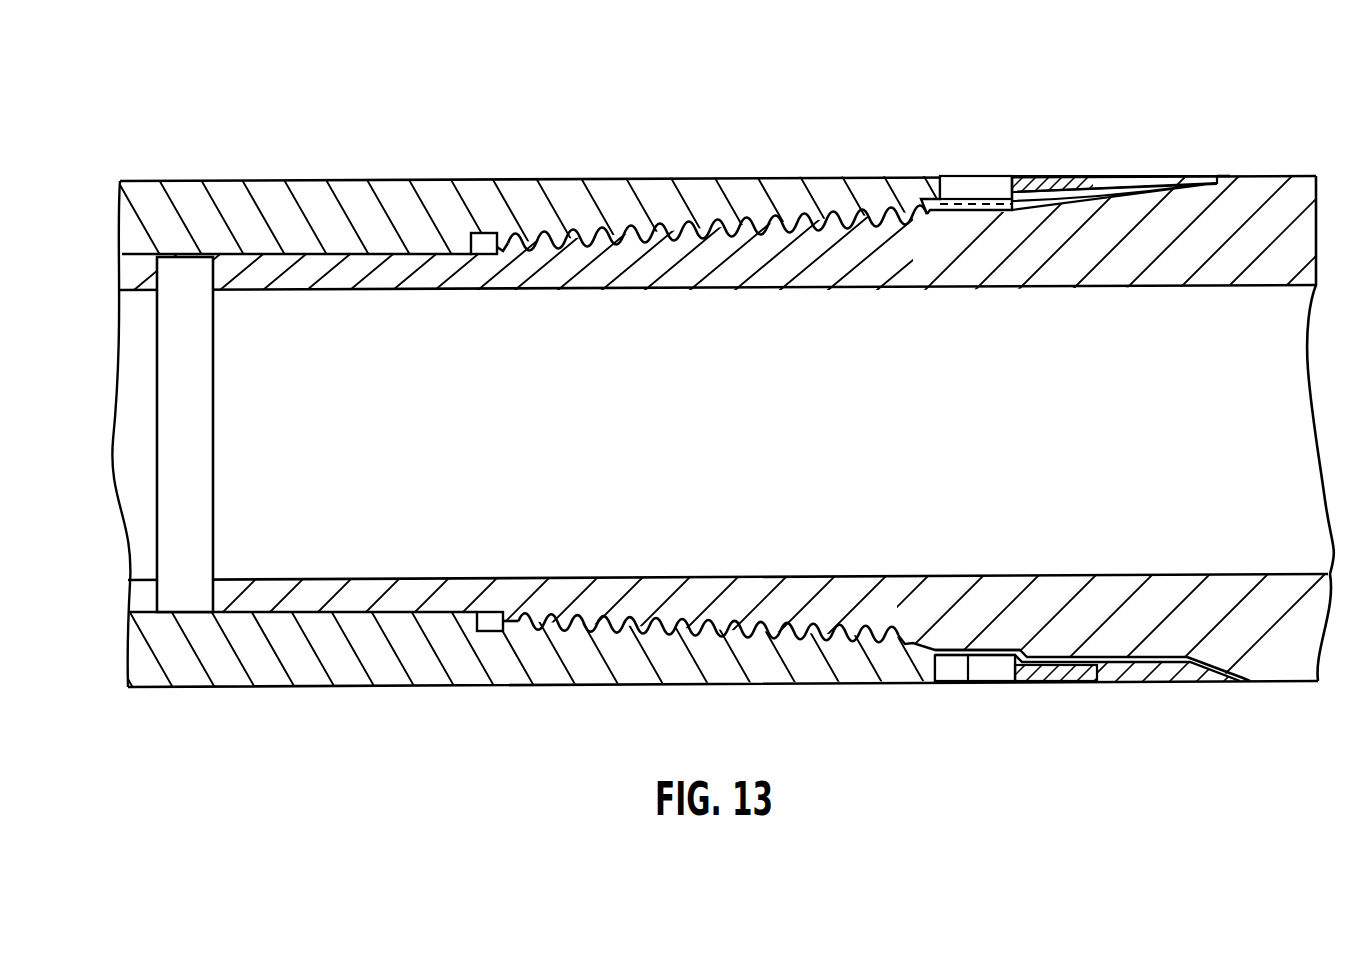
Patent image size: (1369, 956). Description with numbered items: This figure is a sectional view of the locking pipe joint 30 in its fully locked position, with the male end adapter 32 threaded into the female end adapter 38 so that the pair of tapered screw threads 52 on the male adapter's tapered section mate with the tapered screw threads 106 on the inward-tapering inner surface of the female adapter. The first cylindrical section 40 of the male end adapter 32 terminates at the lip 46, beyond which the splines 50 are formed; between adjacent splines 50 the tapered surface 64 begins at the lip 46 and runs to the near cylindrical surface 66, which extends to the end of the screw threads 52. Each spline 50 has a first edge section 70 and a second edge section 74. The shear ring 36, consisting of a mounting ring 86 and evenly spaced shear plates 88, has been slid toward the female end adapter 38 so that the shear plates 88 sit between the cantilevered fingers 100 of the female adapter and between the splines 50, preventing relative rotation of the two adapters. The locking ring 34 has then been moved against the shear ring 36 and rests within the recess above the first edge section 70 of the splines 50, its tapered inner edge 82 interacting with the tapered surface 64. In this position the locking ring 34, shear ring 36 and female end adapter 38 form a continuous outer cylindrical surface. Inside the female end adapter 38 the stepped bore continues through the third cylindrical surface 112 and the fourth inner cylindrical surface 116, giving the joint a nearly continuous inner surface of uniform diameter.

The locking pipe joint 30 is at (1190, 86).
The male end adapter 32 is at (1300, 240).
The locking ring 34 is at (1140, 177).
The shear ring 36 is at (1058, 681).
The female end adapter 38 is at (470, 187).
The first cylindrical section 40 is at (1283, 176).
The lip 46 is at (1240, 681).
The splines 50 is at (1103, 655).
The tapered screw threads 52 is at (623, 620).
The tapered surface 64 is at (1147, 210).
The near cylindrical surface 66 is at (960, 213).
The first edge section 70 is at (1095, 665).
The second edge section 74 is at (968, 665).
The tapered inner edge 82 is at (1215, 188).
The mounting ring 86 is at (1065, 177).
The shear plates 88 is at (955, 178).
The cantilevered fingers 100 is at (980, 290).
The tapered screw threads 106 is at (663, 227).
The third cylindrical surface 112 is at (357, 255).
The fourth inner cylindrical surface 116 is at (140, 575).